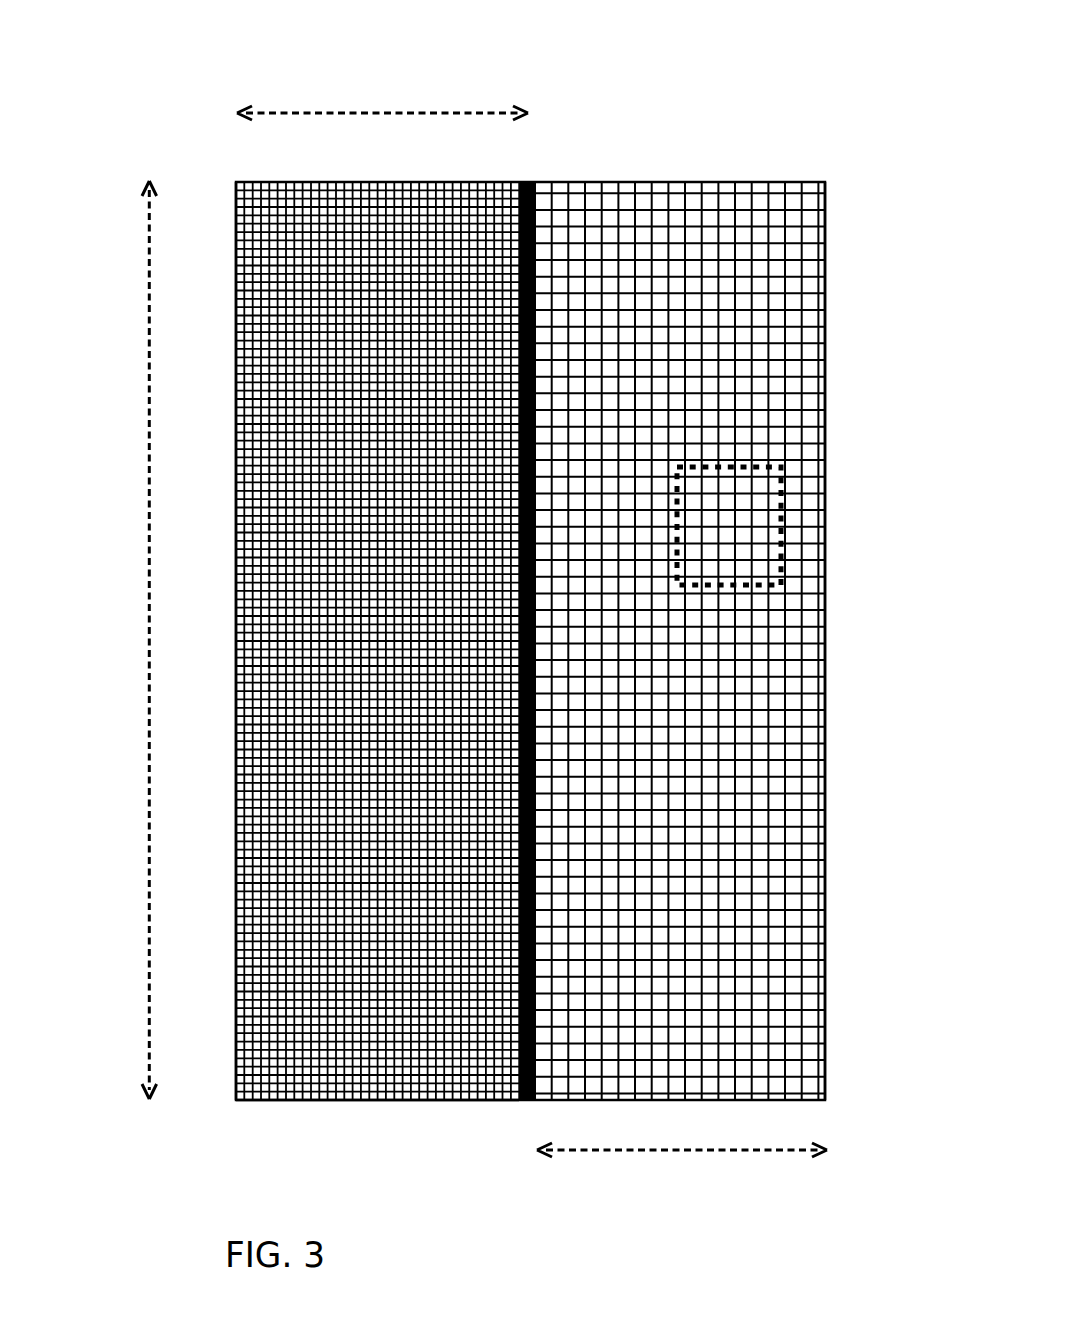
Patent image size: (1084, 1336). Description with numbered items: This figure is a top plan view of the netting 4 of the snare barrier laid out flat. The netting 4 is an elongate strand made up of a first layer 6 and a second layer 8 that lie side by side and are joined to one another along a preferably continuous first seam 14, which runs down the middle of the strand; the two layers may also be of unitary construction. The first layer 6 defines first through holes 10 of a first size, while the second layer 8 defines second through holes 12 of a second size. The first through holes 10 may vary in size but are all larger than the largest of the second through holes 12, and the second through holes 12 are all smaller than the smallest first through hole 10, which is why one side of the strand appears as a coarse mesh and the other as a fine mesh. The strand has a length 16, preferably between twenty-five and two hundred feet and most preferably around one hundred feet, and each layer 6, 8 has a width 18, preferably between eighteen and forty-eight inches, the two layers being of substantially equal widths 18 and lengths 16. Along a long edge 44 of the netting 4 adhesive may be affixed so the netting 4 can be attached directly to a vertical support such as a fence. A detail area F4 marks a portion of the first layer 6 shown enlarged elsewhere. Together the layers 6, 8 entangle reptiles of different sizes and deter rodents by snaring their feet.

The netting 4 is at (860, 1095).
The first layer 6 is at (827, 268).
The second layer 8 is at (442, 1102).
The first through holes 10 is at (792, 871).
The second through holes 12 is at (282, 1076).
The first seam 14 is at (537, 268).
The length 16 is at (148, 547).
The width 18 is at (383, 112).
The long edge 44 is at (235, 443).
The detail area F4 is at (783, 537).